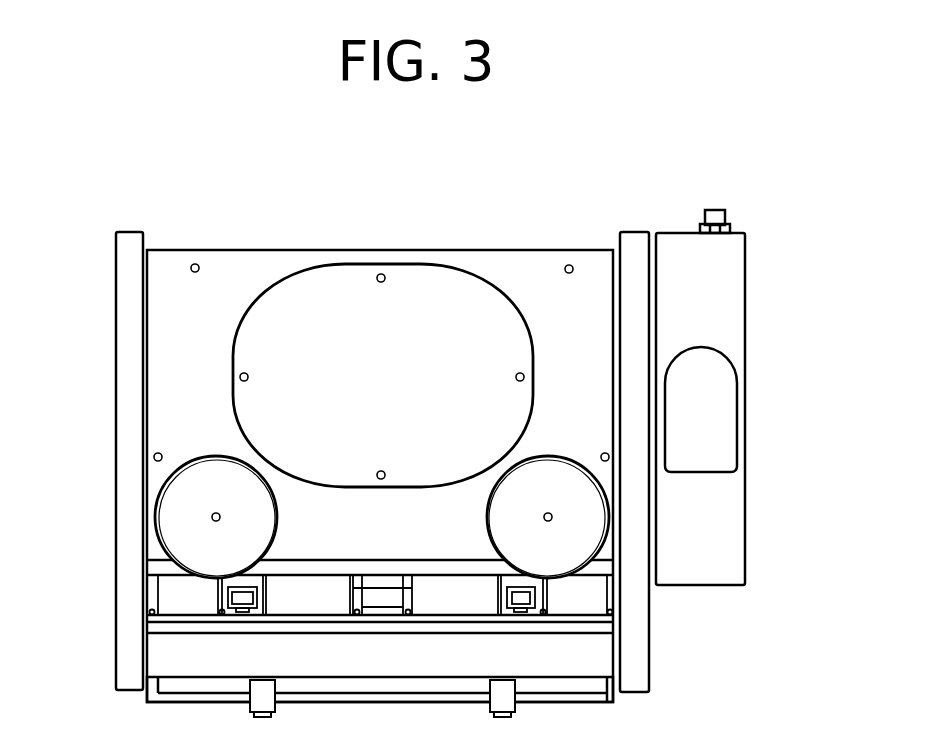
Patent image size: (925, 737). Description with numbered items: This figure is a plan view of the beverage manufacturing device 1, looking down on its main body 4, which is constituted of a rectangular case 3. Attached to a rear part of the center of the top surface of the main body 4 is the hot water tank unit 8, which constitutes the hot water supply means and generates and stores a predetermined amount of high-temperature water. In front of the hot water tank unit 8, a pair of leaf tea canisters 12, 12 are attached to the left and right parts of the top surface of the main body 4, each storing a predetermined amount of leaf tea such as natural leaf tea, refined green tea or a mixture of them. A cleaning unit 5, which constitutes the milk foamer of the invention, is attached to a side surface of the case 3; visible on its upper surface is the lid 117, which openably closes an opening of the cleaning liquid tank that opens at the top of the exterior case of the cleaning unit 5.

The beverage manufacturing device 1 is at (249, 234).
The rectangular case 3 is at (115, 595).
The main body 4 is at (106, 315).
The cleaning unit 5 is at (745, 297).
The hot water tank unit 8 is at (468, 263).
The leaf tea canister 12 is at (178, 500).
The lid 117 is at (743, 400).